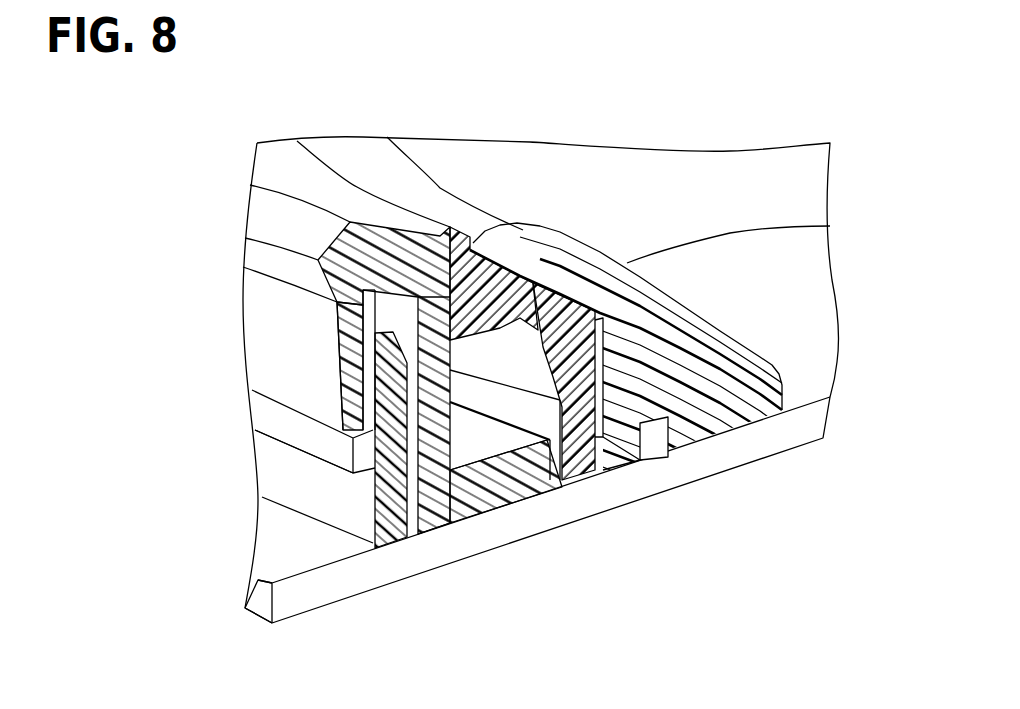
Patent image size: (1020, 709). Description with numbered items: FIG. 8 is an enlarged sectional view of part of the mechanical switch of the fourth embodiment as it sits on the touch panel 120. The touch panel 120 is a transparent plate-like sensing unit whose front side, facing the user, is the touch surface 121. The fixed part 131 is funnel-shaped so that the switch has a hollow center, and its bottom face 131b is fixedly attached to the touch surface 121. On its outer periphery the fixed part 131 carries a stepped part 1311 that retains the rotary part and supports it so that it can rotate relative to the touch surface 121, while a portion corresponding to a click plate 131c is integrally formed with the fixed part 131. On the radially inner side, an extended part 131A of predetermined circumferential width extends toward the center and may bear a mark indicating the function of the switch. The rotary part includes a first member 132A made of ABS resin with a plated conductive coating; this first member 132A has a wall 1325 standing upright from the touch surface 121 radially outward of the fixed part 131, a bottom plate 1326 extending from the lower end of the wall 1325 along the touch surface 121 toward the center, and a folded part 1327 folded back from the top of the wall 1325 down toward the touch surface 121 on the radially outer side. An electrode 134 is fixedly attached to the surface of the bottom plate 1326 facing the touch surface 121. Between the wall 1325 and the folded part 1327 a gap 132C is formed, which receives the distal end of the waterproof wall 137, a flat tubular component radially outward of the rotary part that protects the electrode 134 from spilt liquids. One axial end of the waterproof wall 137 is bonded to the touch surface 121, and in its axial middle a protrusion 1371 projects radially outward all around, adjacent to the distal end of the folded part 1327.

The touch panel 120 is at (277, 553).
The touch surface 121 is at (258, 601).
The fixed part 131 is at (473, 297).
The extended part 131A is at (578, 275).
The bottom face 131b is at (603, 478).
The click plate 131c is at (533, 307).
The stepped part 1311 is at (413, 270).
The first member 132A is at (331, 313).
The gap 132C is at (375, 300).
The wall 1325 is at (435, 370).
The bottom plate 1326 is at (497, 480).
The folded part 1327 is at (356, 355).
The electrode 134 is at (460, 518).
The waterproof wall 137 is at (382, 410).
The protrusion 1371 is at (360, 457).